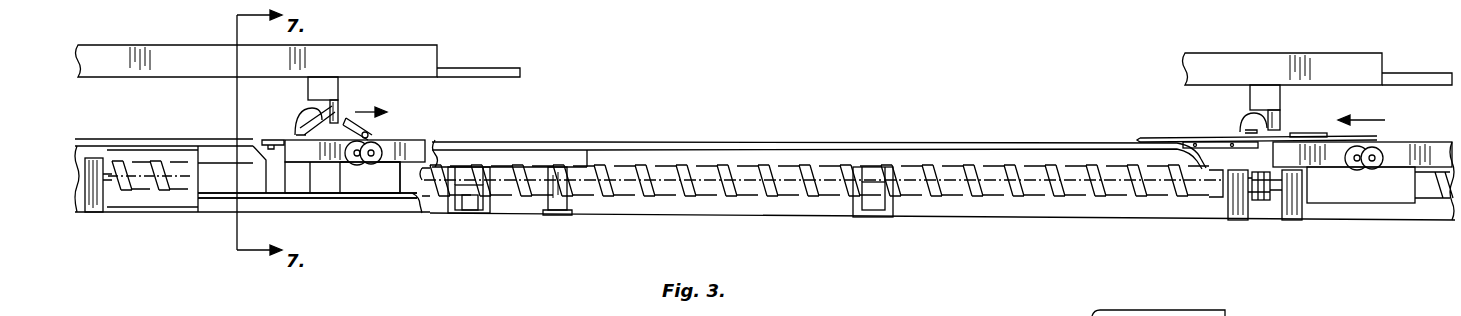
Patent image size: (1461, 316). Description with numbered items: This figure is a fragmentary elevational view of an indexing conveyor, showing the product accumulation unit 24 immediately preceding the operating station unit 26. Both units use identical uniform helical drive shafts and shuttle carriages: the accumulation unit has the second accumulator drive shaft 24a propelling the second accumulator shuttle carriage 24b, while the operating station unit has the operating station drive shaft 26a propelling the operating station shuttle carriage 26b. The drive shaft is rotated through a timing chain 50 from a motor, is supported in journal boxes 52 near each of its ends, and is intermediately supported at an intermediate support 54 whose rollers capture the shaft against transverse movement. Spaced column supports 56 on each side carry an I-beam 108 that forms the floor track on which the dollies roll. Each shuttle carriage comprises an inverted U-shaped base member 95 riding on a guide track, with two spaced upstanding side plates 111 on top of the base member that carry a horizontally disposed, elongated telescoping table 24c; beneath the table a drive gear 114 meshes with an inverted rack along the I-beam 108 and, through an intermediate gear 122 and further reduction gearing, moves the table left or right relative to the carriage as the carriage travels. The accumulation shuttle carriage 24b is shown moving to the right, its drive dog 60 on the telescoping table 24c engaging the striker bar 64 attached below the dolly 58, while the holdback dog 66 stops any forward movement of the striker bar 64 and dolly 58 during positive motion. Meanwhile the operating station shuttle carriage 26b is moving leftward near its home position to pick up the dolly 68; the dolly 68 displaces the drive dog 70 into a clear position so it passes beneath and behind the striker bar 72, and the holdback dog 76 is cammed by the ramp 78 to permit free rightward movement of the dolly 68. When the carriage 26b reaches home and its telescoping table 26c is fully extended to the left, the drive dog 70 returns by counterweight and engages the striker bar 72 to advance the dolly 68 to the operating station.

The second accumulator unit 24 is at (847, 140).
The second accumulator drive shaft 24a is at (1058, 197).
The second accumulator shuttle carriage 24b is at (335, 202).
The telescoping table 24c is at (273, 138).
The operating station unit 26 is at (1363, 189).
The operating station drive shaft 26a is at (1448, 214).
The operating station shuttle carriage 26b is at (1348, 214).
The telescoping table 26c is at (1200, 143).
The timing chain 50 is at (1264, 200).
The journal boxes 52 is at (98, 200).
The intermediate support 54 is at (473, 202).
The column supports 56 is at (566, 202).
The dolly 58 is at (428, 60).
The drive dog 60 is at (302, 124).
The striker bar 64 is at (340, 108).
The holdback dog 66 is at (370, 123).
The dolly 68 is at (1378, 64).
The drive dog 70 is at (1240, 133).
The striker bar 72 is at (1276, 122).
The holdback dog 76 is at (1290, 135).
The ramp 78 is at (1375, 140).
The base member 95 is at (358, 188).
The I-beam 108 is at (550, 152).
The side plates 111 is at (306, 163).
The drive gear 114 is at (385, 140).
The intermediate gear 122 is at (356, 162).